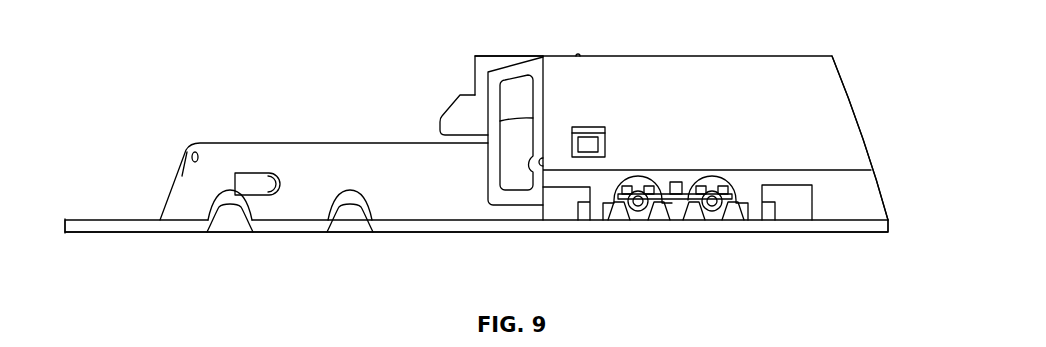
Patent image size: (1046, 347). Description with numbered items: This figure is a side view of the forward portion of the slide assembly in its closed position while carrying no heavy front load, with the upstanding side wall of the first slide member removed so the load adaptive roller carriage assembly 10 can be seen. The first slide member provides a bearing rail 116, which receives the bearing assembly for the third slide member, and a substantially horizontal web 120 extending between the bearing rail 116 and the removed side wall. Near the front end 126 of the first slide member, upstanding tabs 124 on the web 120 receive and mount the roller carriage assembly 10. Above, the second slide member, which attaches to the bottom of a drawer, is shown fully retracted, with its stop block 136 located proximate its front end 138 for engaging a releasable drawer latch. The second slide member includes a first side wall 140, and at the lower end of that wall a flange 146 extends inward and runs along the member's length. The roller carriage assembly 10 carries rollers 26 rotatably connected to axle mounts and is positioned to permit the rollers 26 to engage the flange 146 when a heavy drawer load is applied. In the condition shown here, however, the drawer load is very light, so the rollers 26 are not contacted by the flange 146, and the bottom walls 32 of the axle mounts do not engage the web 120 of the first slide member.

The load adaptive roller carriage assembly 10 is at (676, 222).
The rollers 26 is at (633, 176).
The bottom walls 32 is at (632, 222).
The bearing rail 116 is at (340, 157).
The web 120 is at (462, 226).
The upstanding tabs 124 is at (562, 193).
The front end 126 is at (64, 223).
The stop block 136 is at (452, 90).
The front end 138 is at (475, 70).
The first side wall 140 is at (716, 72).
The flange 146 is at (855, 180).